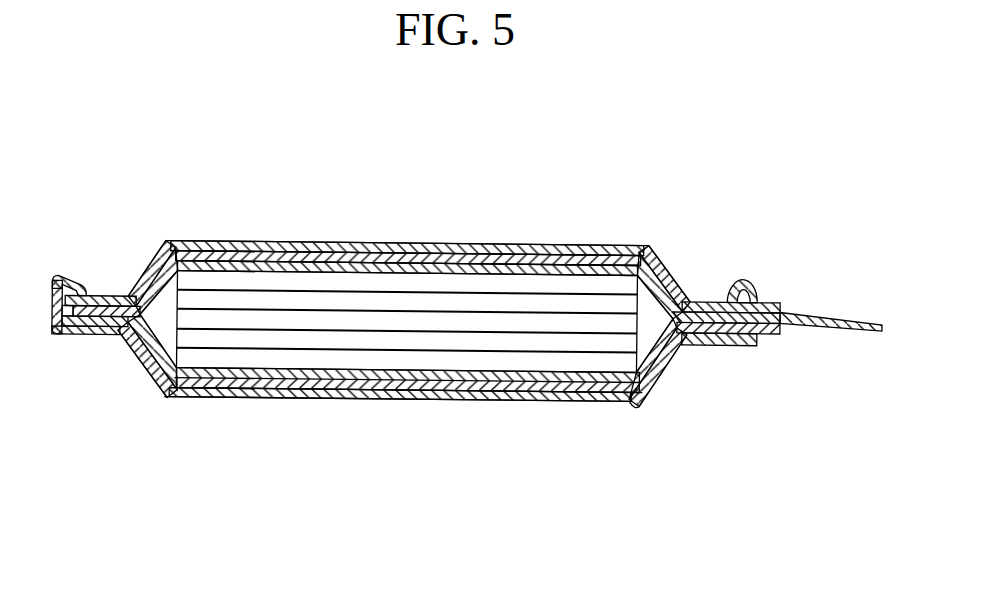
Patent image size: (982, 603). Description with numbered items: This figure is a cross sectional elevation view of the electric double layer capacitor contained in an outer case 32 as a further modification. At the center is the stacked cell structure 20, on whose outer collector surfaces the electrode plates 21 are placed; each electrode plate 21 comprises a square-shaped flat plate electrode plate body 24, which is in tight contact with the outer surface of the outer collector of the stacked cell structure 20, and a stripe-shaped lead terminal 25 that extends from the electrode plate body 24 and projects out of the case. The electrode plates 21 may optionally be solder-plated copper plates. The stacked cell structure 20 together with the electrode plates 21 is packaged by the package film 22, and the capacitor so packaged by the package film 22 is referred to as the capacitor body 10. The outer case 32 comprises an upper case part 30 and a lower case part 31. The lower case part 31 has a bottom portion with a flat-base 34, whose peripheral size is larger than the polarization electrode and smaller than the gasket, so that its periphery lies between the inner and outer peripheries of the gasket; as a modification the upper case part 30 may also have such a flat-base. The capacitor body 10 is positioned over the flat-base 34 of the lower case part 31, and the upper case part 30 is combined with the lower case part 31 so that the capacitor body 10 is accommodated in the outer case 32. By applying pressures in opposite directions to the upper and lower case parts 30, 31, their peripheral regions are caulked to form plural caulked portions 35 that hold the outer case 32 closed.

The capacitor body 10 is at (598, 238).
The stacked cell structure 20 is at (156, 298).
The electrode plate 21 is at (300, 262).
The package film 22 is at (393, 250).
The electrode plate body 24 is at (510, 248).
The lead terminal 25 is at (832, 320).
The upper case part 30 is at (203, 244).
The lower case part 31 is at (162, 395).
The outer case 32 is at (130, 378).
The flat-base 34 is at (378, 393).
The caulked portion 35 is at (62, 276).